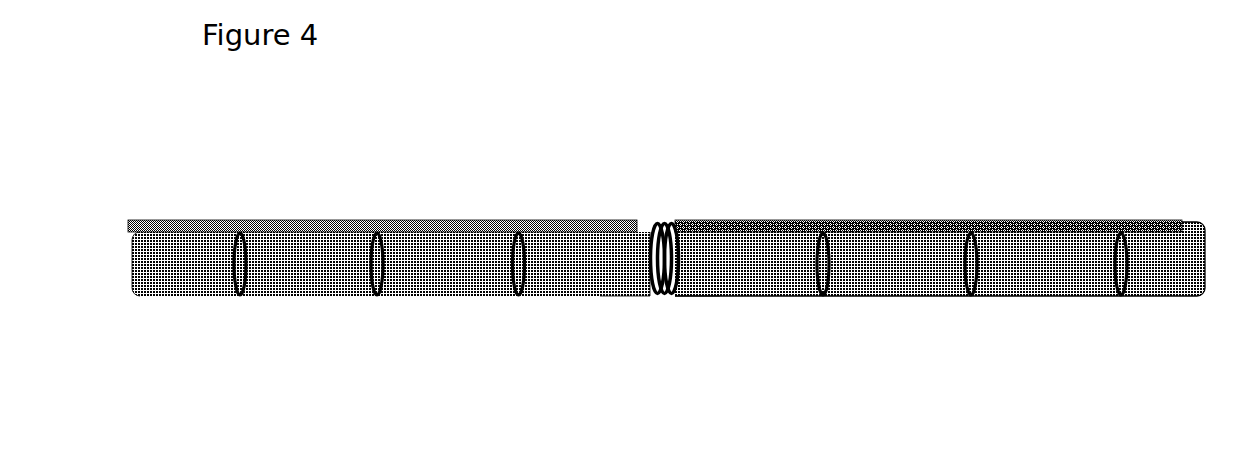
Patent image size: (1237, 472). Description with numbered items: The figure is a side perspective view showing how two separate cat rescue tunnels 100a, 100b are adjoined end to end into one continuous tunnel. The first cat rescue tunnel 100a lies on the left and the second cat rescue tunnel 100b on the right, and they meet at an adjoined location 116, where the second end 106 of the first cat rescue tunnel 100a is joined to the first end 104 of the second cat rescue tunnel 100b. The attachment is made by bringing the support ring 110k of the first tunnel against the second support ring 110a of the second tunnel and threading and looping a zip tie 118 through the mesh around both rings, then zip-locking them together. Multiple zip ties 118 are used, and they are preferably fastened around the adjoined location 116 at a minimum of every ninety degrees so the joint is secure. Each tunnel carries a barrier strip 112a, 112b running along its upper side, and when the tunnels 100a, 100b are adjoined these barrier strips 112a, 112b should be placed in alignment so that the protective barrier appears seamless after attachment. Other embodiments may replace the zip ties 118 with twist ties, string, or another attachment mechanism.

The first cat rescue tunnel 100a is at (327, 296).
The second cat rescue tunnel 100b is at (1012, 296).
The barrier strip 112a is at (418, 228).
The barrier strip 112b is at (887, 235).
The first end 104 is at (677, 207).
The second end 106 is at (643, 207).
The second support ring 110a is at (668, 207).
The support ring 110k is at (658, 207).
The adjoined location 116 is at (675, 302).
The zip tie 118 is at (648, 315).